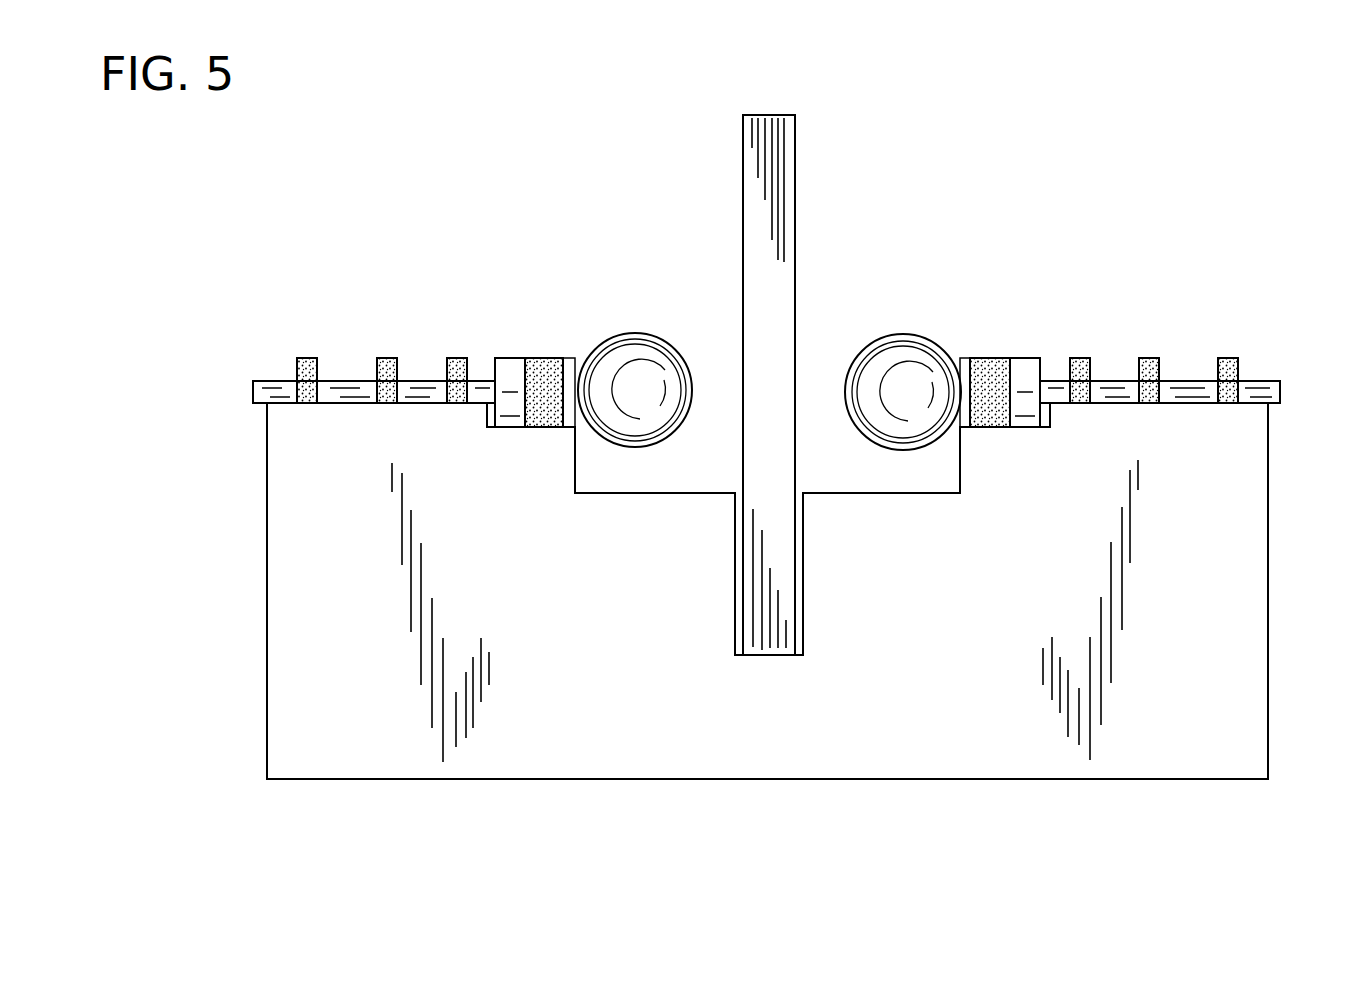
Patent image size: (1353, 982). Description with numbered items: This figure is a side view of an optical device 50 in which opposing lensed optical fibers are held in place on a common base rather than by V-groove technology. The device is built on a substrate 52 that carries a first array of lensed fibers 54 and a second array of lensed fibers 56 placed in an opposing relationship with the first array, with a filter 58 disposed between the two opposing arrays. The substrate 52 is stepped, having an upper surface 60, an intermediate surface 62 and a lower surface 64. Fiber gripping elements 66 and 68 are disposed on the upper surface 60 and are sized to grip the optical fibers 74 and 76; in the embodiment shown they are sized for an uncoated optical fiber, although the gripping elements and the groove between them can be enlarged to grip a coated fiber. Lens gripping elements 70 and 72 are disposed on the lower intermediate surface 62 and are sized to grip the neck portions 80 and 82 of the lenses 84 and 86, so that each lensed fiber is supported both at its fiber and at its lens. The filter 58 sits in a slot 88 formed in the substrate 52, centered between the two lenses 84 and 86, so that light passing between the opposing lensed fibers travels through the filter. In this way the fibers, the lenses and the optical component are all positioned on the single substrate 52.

The optical device 50 is at (398, 183).
The substrate 52 is at (993, 757).
The first array of lensed fibers 54 is at (413, 356).
The second array of lensed fibers 56 is at (1110, 322).
The filter 58 is at (782, 140).
The upper surface 60 is at (288, 403).
The intermediate surface 62 is at (523, 430).
The lower surface 64 is at (690, 492).
The fiber gripping elements 66 is at (383, 358).
The fiber gripping elements 68 is at (1230, 358).
The lens gripping element 70 is at (545, 358).
The lens gripping element 72 is at (993, 363).
The optical fiber 74 is at (278, 378).
The optical fiber 76 is at (1262, 392).
The neck portion 80 is at (496, 358).
The neck portion 82 is at (1025, 363).
The lens 84 is at (640, 345).
The lens 86 is at (912, 348).
The slot 88 is at (805, 630).